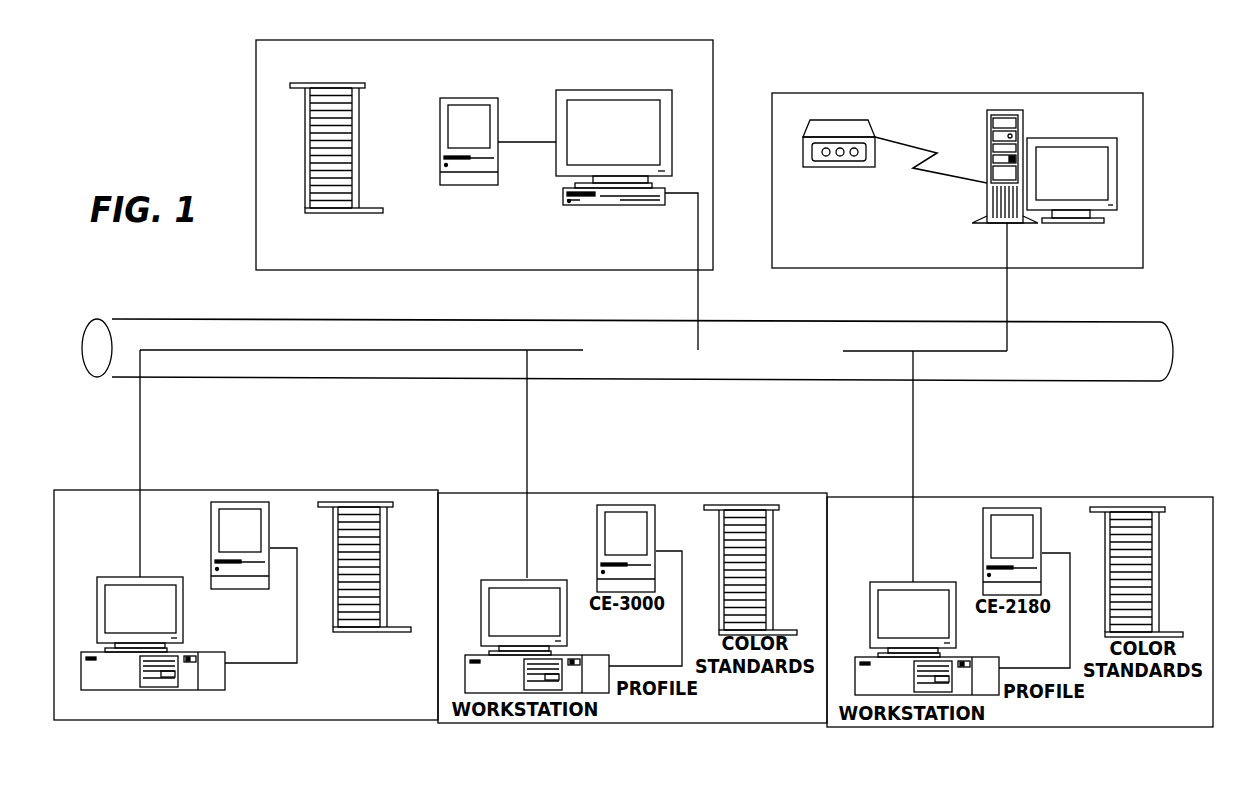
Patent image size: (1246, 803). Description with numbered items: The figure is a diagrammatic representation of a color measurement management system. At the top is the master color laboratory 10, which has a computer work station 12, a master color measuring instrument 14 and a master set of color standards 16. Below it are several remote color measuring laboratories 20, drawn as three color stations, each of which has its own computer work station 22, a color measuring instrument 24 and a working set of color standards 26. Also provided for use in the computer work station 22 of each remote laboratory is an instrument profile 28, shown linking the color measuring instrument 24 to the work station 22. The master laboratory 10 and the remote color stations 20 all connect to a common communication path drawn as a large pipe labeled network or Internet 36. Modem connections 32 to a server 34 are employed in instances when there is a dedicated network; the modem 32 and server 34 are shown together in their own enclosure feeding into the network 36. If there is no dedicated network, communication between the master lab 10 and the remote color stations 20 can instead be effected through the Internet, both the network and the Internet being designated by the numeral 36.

The master color laboratory 10 is at (248, 94).
The computer work station 12 is at (612, 90).
The master color measuring instrument 14 is at (440, 117).
The master set of color standards 16 is at (363, 181).
The remote color measuring laboratories 20 is at (414, 484).
The computer work station 22 is at (81, 666).
The color measuring instrument 24 is at (211, 549).
The working set of color standards 26 is at (391, 577).
The instrument profile 28 is at (215, 651).
The modem connections 32 is at (833, 128).
The server 34 is at (1055, 138).
The network or Internet 36 is at (907, 323).